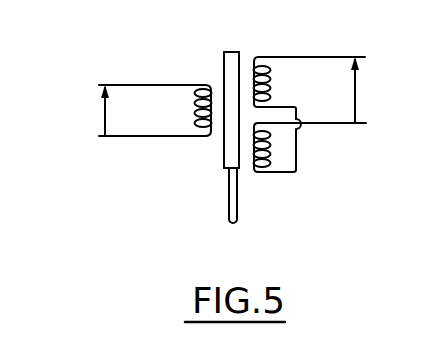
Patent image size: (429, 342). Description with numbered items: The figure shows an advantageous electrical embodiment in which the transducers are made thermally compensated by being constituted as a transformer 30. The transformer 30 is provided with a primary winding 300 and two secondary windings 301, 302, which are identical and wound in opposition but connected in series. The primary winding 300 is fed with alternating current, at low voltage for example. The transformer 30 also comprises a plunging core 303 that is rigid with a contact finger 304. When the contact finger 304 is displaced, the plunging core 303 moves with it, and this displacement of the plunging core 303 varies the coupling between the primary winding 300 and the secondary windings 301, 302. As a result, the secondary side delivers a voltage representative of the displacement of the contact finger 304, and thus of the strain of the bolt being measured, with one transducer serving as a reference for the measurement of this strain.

The transformer 30 is at (211, 68).
The primary winding 300 is at (202, 86).
The secondary winding 301 is at (268, 62).
The secondary winding 302 is at (267, 146).
The plunging core 303 is at (223, 143).
The contact finger 304 is at (232, 203).